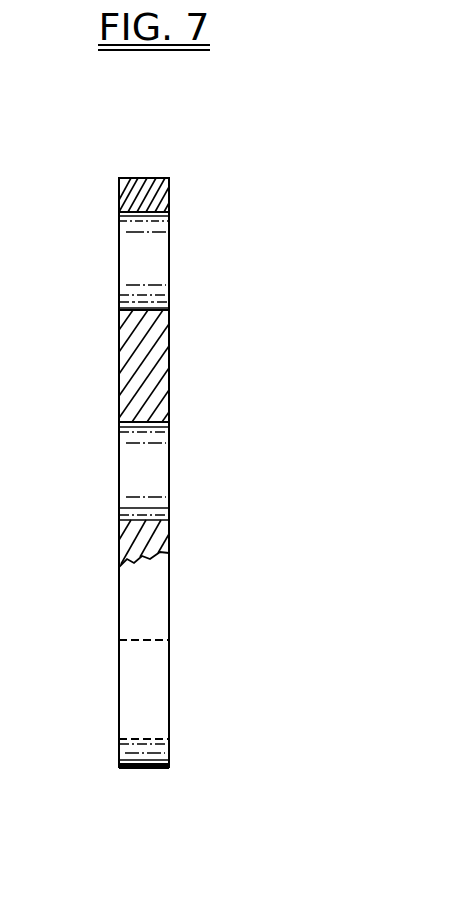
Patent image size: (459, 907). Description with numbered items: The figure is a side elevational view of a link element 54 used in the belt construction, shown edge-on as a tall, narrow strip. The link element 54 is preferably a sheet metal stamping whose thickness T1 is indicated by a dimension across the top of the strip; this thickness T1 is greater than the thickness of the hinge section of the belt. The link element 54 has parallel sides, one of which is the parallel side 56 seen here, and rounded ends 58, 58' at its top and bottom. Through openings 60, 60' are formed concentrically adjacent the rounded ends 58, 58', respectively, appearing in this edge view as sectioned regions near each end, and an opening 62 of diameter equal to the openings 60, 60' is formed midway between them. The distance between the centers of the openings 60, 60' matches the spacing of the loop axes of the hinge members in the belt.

The thickness of the link element T1 is at (42, 106).
The link element 54 is at (119, 612).
The parallel side 56 is at (163, 583).
The rounded end 58 is at (100, 171).
The rounded end 58' is at (176, 780).
The through opening 60 is at (202, 237).
The through opening 60' is at (206, 668).
The opening 62 is at (146, 477).